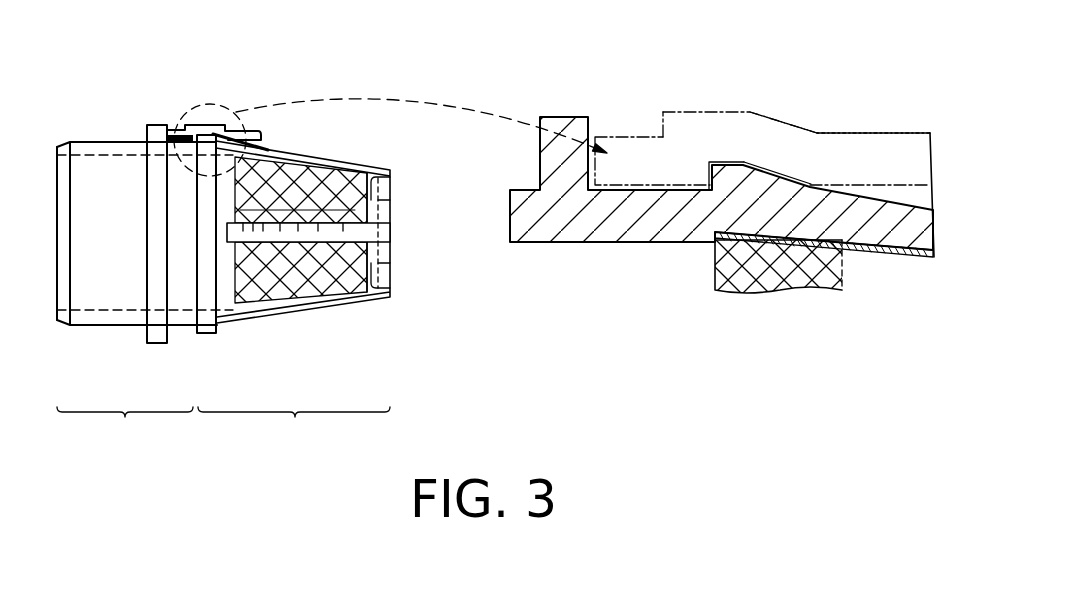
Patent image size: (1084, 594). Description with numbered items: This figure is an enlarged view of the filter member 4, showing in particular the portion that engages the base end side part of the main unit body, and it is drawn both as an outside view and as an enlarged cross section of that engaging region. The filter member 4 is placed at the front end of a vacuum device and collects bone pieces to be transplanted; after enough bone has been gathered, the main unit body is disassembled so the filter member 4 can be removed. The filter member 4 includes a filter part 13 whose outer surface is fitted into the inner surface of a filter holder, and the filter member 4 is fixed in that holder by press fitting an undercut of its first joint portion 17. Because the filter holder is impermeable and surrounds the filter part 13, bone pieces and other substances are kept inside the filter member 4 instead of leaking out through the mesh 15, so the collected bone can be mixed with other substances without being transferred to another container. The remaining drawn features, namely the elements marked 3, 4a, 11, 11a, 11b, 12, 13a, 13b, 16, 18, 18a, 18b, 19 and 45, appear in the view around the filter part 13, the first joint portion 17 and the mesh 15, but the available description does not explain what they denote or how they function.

The substrate 3 is at (870, 128).
The filter member 4 is at (268, 332).
The cable core portion 4a is at (765, 241).
The housing 11 is at (722, 163).
The housing sloped portion 11a is at (763, 163).
The housing step portion 11b is at (710, 163).
The base portion 12 is at (599, 225).
The filter part 13 is at (294, 297).
The end wall portion 13a is at (372, 163).
The partition plate 13b is at (383, 256).
The mesh 15 is at (300, 290).
The flange 16 is at (155, 125).
The first joint portion 17 is at (190, 124).
The conductive sheet 18 is at (203, 122).
The sheet sloped portion 18a is at (797, 177).
The sheet step portion 18b is at (690, 190).
The end cap 19 is at (105, 140).
The filler 45 is at (301, 230).